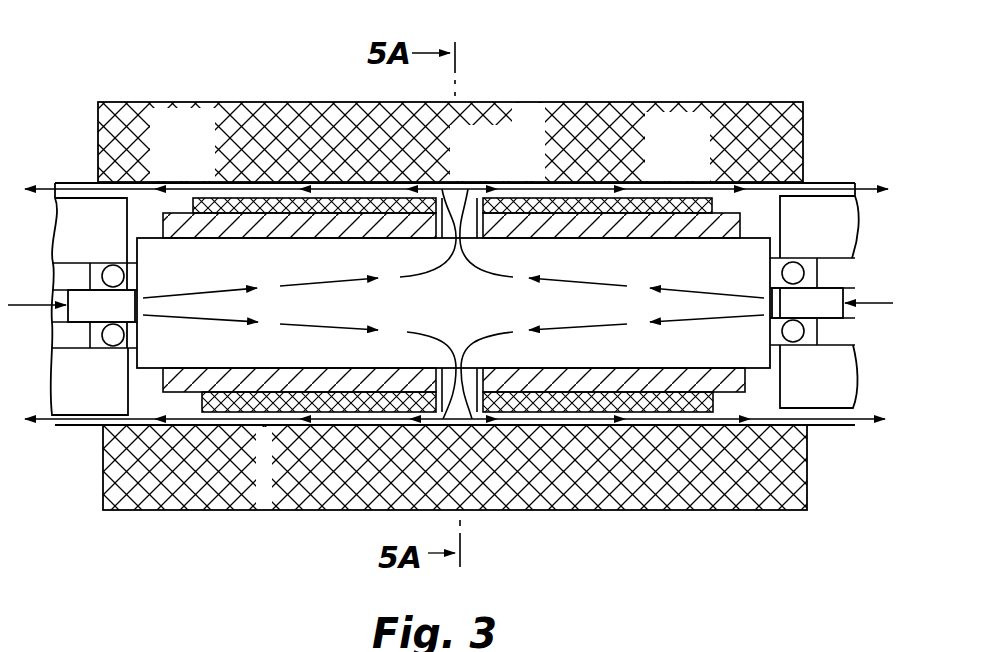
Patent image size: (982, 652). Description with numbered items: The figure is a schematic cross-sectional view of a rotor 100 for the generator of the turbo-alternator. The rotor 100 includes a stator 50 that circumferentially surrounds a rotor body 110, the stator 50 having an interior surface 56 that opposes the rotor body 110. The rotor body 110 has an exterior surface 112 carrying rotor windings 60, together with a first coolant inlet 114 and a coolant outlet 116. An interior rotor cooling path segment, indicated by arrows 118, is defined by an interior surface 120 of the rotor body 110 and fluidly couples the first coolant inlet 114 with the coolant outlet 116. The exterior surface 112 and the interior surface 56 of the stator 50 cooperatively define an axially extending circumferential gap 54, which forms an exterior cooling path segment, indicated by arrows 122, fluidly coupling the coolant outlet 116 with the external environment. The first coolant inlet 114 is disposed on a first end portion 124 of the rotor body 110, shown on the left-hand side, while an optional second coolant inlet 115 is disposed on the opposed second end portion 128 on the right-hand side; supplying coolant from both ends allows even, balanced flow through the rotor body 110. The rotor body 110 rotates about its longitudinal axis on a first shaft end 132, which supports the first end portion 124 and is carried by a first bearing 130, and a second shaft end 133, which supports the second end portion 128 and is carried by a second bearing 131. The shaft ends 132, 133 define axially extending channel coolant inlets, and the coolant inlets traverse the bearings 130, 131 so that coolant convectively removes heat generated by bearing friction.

The rotor 100 is at (140, 58).
The exterior cooling path segment 122 is at (45, 186).
The first shaft end 132 is at (52, 277).
The first bearing 130 is at (110, 266).
The first coolant inlet 114 is at (71, 306).
The rotor body 110 is at (172, 206).
The exterior surface 112 is at (507, 191).
The first end portion 124 is at (208, 277).
The interior surface 120 is at (224, 240).
The coolant outlet 116 is at (436, 228).
The interior rotor cooling path segment 118 is at (441, 333).
The second end portion 128 is at (734, 349).
The circumferential gap 54 is at (518, 192).
The rotor windings 60 is at (653, 181).
The second bearing 131 is at (796, 264).
The second shaft end 133 is at (852, 282).
The second coolant inlet 115 is at (832, 303).
The interior surface 56 is at (265, 427).
The stator 50 is at (318, 512).